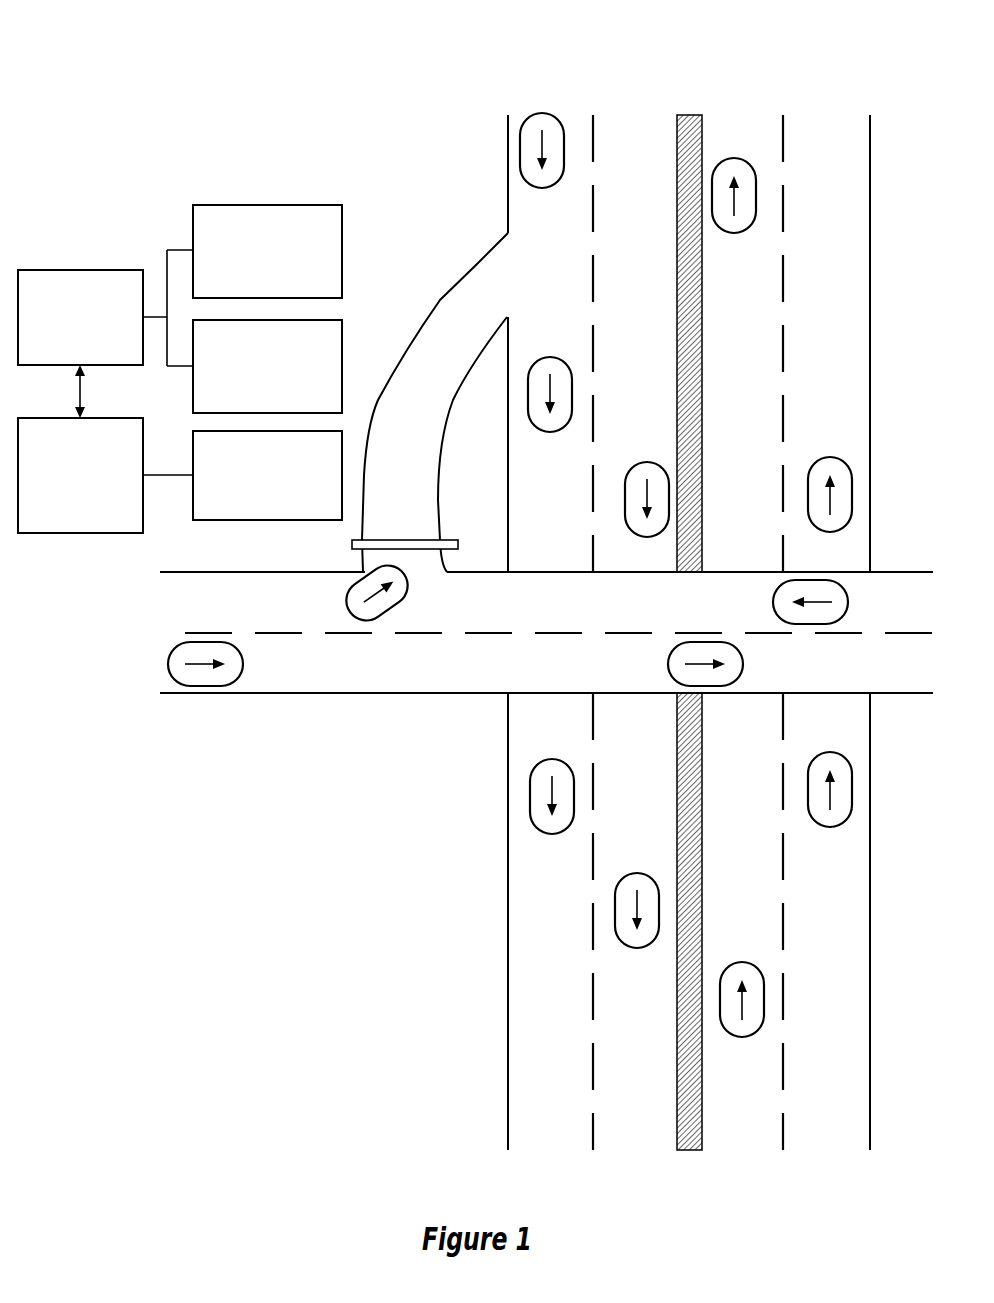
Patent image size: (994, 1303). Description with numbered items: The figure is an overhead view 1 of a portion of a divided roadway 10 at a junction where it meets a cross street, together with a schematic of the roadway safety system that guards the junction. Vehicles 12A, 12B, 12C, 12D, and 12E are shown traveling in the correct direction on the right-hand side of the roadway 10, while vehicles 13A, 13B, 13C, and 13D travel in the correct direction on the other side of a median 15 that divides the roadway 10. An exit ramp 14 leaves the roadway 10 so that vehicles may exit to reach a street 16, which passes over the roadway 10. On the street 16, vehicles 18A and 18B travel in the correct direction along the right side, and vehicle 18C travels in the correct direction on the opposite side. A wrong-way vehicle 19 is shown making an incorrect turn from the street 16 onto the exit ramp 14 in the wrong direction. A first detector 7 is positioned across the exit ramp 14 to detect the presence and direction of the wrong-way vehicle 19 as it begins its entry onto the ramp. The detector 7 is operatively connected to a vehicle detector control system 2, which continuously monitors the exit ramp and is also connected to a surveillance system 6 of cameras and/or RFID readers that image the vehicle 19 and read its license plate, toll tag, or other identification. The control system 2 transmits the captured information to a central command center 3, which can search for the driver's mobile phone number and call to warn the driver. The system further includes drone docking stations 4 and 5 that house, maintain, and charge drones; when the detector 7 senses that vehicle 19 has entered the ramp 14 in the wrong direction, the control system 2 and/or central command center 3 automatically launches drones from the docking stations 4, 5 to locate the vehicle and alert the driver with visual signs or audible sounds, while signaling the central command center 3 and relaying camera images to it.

The overhead view 1 is at (90, 38).
The vehicle detector control system 2 is at (119, 520).
The central command center 3 is at (122, 350).
The drone docking station 4 is at (309, 283).
The drone docking station 5 is at (309, 398).
The surveillance system 6 is at (308, 495).
The first detector 7 is at (352, 546).
The roadway 10 is at (625, 240).
The vehicle 12A is at (649, 461).
The vehicle 12B is at (554, 356).
The vehicle 12C is at (542, 113).
The vehicle 12D is at (555, 758).
The vehicle 12E is at (637, 872).
The vehicle 13A is at (834, 457).
The vehicle 13B is at (736, 158).
The vehicle 13C is at (747, 960).
The vehicle 13D is at (834, 751).
The exit ramp 14 is at (448, 326).
The median 15 is at (690, 115).
The street 16 is at (541, 670).
The vehicle 18A is at (168, 664).
The vehicle 18B is at (668, 664).
The vehicle 18C is at (773, 601).
The wrong-way vehicle 19 is at (343, 595).